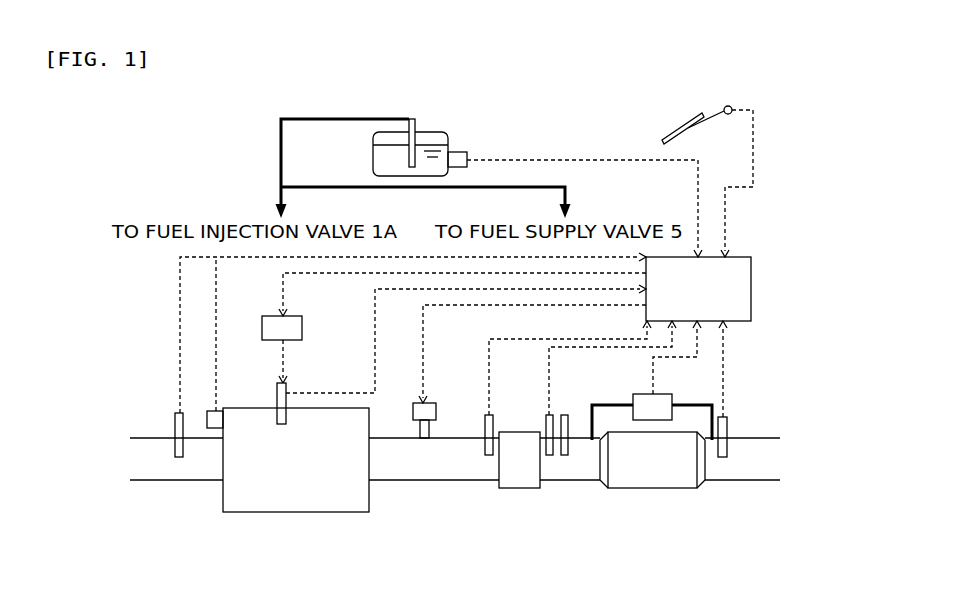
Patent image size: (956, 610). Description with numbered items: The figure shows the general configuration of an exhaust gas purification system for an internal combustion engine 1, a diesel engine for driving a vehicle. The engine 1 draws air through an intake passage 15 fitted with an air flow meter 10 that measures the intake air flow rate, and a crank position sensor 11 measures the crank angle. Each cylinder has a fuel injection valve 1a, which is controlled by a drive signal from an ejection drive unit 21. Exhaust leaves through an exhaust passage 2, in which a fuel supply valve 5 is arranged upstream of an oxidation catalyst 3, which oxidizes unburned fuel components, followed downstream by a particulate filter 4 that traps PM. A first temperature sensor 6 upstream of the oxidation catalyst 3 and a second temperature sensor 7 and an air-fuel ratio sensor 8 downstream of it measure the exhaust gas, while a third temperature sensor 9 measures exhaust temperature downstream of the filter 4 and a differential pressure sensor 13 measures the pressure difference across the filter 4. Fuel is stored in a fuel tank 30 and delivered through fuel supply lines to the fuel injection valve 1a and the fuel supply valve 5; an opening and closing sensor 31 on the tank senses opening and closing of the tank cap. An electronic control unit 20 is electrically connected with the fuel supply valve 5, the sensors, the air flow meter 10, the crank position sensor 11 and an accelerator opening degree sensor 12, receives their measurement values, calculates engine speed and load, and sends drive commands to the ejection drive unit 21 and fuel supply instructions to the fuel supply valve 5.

The internal combustion engine 1 is at (283, 513).
The fuel injection valve 1a is at (287, 383).
The exhaust passage 2 is at (397, 482).
The oxidation catalyst 3 is at (519, 489).
The particulate filter 4 is at (650, 490).
The fuel supply valve 5 is at (432, 402).
The first temperature sensor 6 is at (488, 415).
The second temperature sensor 7 is at (548, 415).
The air-fuel ratio sensor 8 is at (566, 415).
The third temperature sensor 9 is at (725, 417).
The air flow meter 10 is at (180, 412).
The crank position sensor 11 is at (213, 411).
The accelerator opening degree sensor 12 is at (731, 115).
The differential pressure sensor 13 is at (669, 394).
The intake passage 15 is at (152, 482).
The electronic control unit 20 is at (742, 256).
The ejection drive unit 21 is at (302, 320).
The fuel tank 30 is at (449, 136).
The opening and closing sensor 31 is at (468, 165).